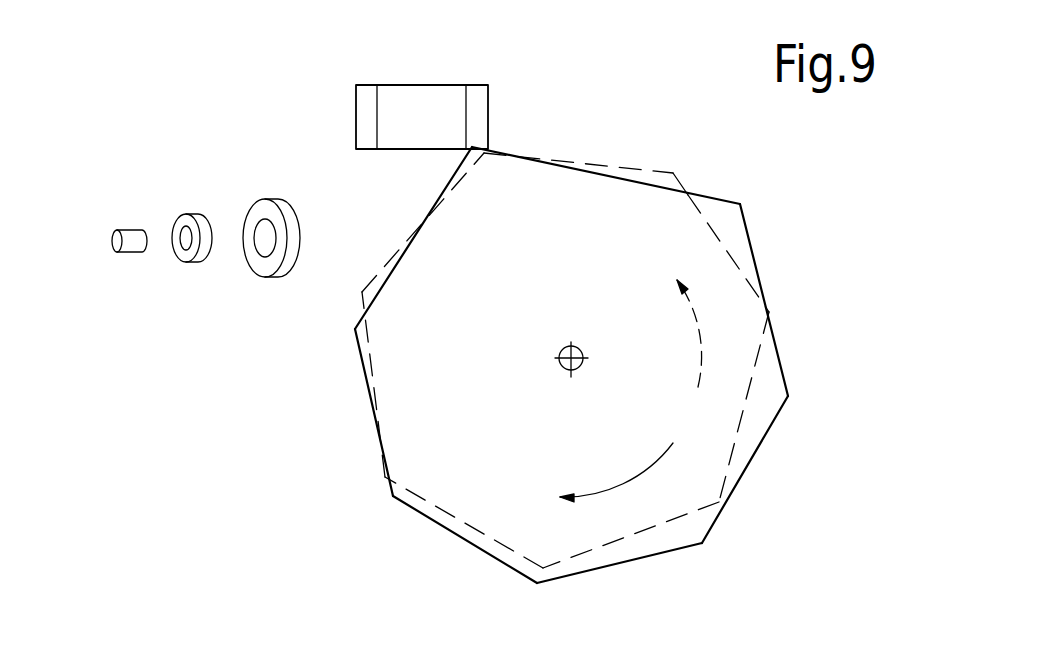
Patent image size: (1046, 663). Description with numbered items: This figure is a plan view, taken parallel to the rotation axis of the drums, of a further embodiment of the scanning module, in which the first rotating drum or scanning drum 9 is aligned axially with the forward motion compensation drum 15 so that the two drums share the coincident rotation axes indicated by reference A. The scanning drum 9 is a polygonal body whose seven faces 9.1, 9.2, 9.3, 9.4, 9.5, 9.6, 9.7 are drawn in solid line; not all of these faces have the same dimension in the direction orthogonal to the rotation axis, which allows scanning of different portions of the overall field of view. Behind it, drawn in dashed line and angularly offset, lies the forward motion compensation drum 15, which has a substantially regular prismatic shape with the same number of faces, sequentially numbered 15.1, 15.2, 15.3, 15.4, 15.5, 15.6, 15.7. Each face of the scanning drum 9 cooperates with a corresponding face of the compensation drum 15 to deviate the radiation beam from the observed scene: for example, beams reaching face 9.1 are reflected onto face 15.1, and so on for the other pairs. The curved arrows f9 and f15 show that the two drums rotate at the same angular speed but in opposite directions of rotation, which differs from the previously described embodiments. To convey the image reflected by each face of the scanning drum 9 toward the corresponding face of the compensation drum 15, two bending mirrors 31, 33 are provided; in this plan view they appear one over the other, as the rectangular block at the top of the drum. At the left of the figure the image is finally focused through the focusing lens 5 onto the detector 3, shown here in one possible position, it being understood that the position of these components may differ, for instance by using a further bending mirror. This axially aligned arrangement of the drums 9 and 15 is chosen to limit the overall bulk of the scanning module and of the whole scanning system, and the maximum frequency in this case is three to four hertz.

The detector 3 is at (123, 232).
The focusing lens 5 is at (258, 270).
The scanning drum 9 is at (586, 384).
The face of the scanning drum 9.1 is at (384, 283).
The face of the scanning drum 9.2 is at (365, 386).
The face of the scanning drum 9.3 is at (482, 551).
The face of the scanning drum 9.4 is at (637, 560).
The face of the scanning drum 9.5 is at (745, 470).
The face of the scanning drum 9.6 is at (760, 277).
The face of the scanning drum 9.7 is at (645, 181).
The forward motion compensation drum 15 is at (616, 352).
The face of the forward motion compensation drum 15.1 is at (452, 196).
The face of the forward motion compensation drum 15.2 is at (364, 347).
The face of the forward motion compensation drum 15.3 is at (452, 528).
The face of the forward motion compensation drum 15.4 is at (658, 520).
The face of the forward motion compensation drum 15.5 is at (755, 390).
The face of the forward motion compensation drum 15.6 is at (716, 238).
The face of the forward motion compensation drum 15.7 is at (627, 167).
The bending mirror 31 is at (418, 104).
The bending mirror 33 is at (480, 113).
The rotation axis A is at (565, 370).
The rotation arrow of the scanning drum f9 is at (627, 479).
The rotation arrow of the compensation drum f15 is at (696, 350).